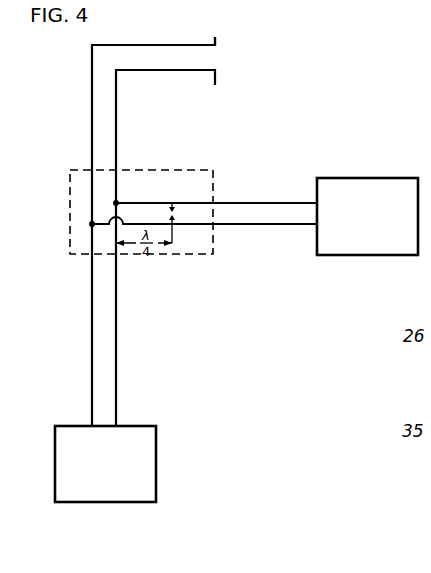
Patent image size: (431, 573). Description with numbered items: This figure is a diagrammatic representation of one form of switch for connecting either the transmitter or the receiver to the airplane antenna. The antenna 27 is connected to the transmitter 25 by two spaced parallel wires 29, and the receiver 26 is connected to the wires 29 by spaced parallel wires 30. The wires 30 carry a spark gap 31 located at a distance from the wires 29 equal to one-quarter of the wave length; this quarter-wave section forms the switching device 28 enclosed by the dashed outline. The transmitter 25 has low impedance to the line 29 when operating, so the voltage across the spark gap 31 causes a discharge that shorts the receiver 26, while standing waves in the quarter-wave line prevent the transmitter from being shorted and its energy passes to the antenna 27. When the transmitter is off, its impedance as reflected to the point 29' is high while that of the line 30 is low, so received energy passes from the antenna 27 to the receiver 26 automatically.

The transmitter 25 is at (53, 432).
The receiver 26 is at (384, 176).
The antenna 27 is at (218, 46).
The switching device 28 is at (149, 172).
The spaced parallel wires 29 is at (131, 248).
The point 29' is at (124, 231).
The spaced parallel wires 30 is at (281, 200).
The spark gap 31 is at (176, 213).